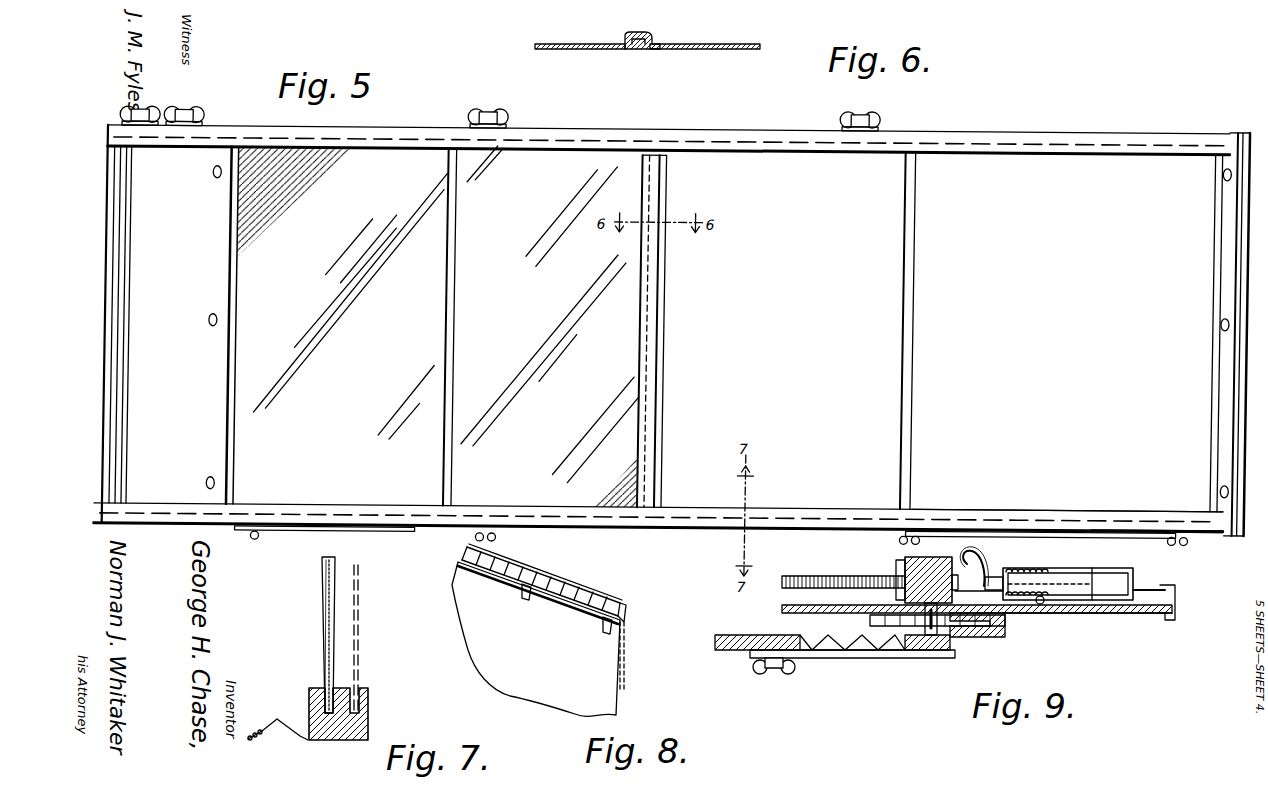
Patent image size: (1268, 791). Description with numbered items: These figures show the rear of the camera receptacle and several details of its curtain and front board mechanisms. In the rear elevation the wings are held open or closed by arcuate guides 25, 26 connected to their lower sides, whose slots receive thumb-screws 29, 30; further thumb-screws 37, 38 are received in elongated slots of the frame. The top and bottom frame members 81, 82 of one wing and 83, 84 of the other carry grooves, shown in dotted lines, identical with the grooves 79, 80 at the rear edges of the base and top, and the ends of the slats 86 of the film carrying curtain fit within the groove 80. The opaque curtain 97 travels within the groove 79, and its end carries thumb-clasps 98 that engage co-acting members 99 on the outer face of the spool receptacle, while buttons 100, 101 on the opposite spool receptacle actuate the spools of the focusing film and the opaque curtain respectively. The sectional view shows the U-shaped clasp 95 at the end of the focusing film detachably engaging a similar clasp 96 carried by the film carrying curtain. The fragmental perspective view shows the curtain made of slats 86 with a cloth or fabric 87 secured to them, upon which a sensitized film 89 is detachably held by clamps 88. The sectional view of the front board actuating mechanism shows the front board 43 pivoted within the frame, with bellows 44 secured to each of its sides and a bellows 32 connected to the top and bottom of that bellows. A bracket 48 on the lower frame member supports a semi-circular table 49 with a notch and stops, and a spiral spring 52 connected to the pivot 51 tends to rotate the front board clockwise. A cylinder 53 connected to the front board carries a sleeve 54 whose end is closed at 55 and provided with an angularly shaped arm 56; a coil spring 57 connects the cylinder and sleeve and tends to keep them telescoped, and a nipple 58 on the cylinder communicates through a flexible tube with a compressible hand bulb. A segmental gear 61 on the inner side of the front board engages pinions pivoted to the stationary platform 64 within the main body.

In FIG. 5, the guide 25 is at (1108, 520).
In FIG. 5, the guide 26 is at (320, 528).
In FIG. 5, the thumb-screw 29 is at (930, 518).
In FIG. 5, the thumb-screw 30 is at (504, 531).
In FIG. 9, the bellows 32 is at (818, 640).
In FIG. 5, the thumb-screw 37 is at (860, 108).
In FIG. 5, the thumb-screw 38 is at (489, 108).
In FIG. 9, the thumb-screw 38 is at (760, 672).
In FIG. 9, the front board 43 is at (910, 557).
In FIG. 9, the bellows 44 is at (900, 568).
In FIG. 9, the bracket 48 is at (1005, 630).
In FIG. 9, the semi-circular table 49 is at (1110, 616).
In FIG. 9, the pivot 51 is at (928, 648).
In FIG. 9, the spiral spring 52 is at (888, 645).
In FIG. 9, the cylinder 53 is at (1042, 604).
In FIG. 9, the sleeve 54 is at (1105, 570).
In FIG. 9, the closed end 55 is at (1140, 584).
In FIG. 9, the angularly shaped arm 56 is at (1176, 600).
In FIG. 9, the spring 57 is at (1028, 568).
In FIG. 9, the nipple 58 is at (988, 570).
In FIG. 9, the segmental gear 61 is at (835, 565).
In FIG. 9, the stationary platform 64 is at (786, 609).
In FIG. 7, the groove 79 is at (368, 711).
In FIG. 7, the groove 80 is at (325, 741).
In FIG. 5, the top frame member 81 is at (294, 148).
In FIG. 5, the bottom frame member 82 is at (288, 503).
In FIG. 5, the top frame member 83 is at (1098, 142).
In FIG. 5, the bottom frame member 84 is at (1056, 504).
In FIG. 7, the slats 86 is at (333, 562).
In FIG. 8, the slats 86 is at (590, 593).
In FIG. 5, the cloth or fabric 87 is at (783, 329).
In FIG. 7, the cloth or fabric 87 is at (337, 591).
In FIG. 8, the cloth or fabric 87 is at (627, 632).
In FIG. 8, the clamps 88 is at (525, 592).
In FIG. 7, the sensitized film 89 is at (322, 603).
In FIG. 8, the sensitized film 89 is at (536, 639).
In FIG. 6, the U-shaped clasp 95 is at (643, 52).
In FIG. 6, the clasp 96 is at (656, 38).
In FIG. 5, the opaque curtain 97 is at (189, 325).
In FIG. 5, the thumb-clasps 98 is at (217, 175).
In FIG. 5, the co-acting members 99 is at (1224, 166).
In FIG. 5, the button 100 is at (190, 110).
In FIG. 5, the button 101 is at (138, 108).